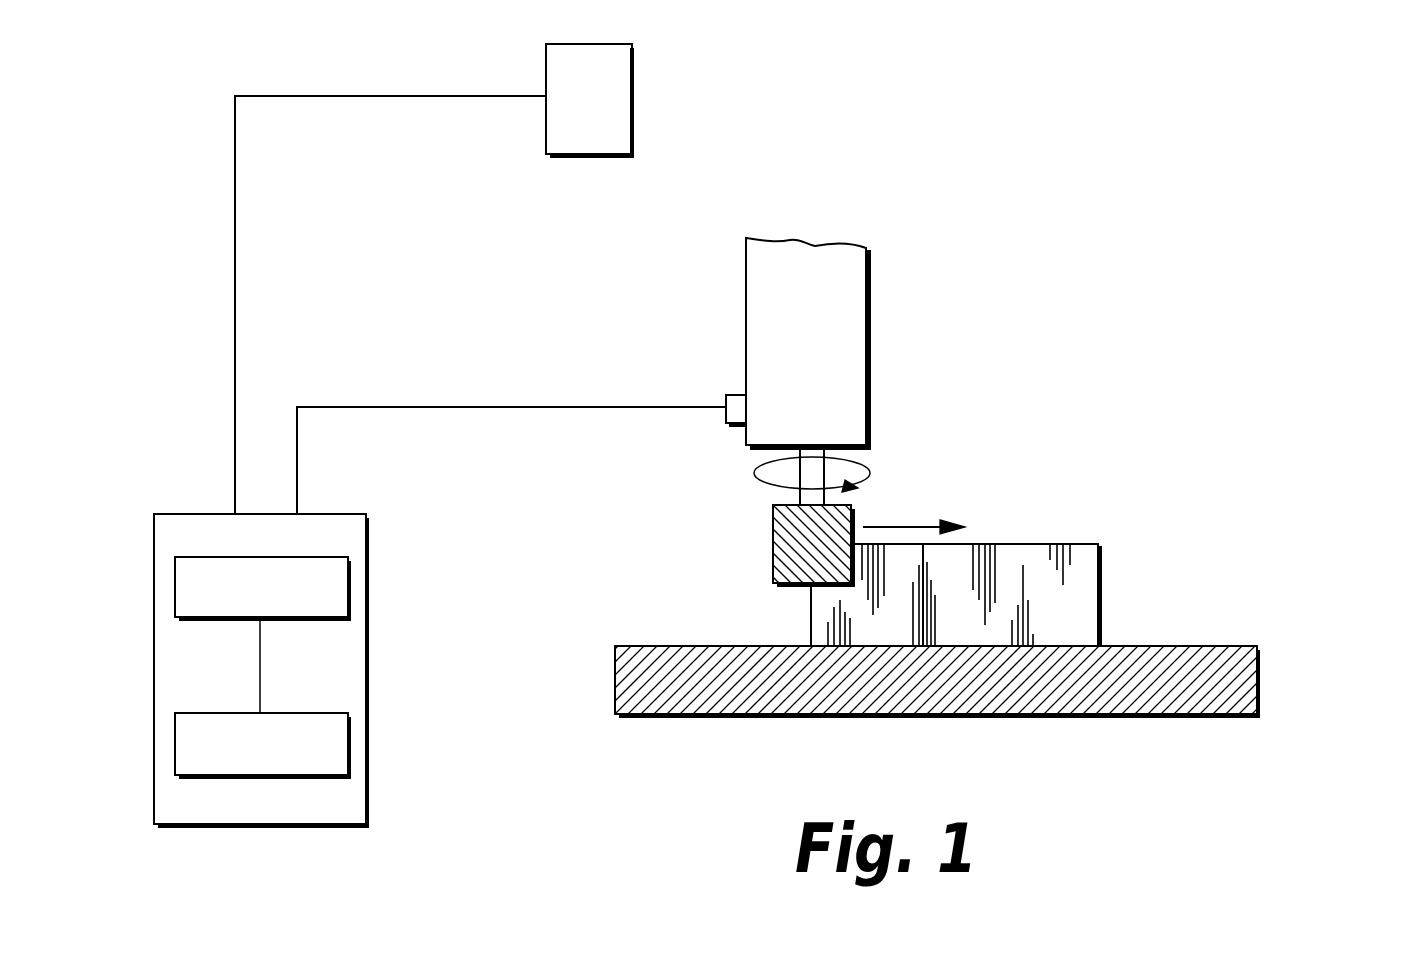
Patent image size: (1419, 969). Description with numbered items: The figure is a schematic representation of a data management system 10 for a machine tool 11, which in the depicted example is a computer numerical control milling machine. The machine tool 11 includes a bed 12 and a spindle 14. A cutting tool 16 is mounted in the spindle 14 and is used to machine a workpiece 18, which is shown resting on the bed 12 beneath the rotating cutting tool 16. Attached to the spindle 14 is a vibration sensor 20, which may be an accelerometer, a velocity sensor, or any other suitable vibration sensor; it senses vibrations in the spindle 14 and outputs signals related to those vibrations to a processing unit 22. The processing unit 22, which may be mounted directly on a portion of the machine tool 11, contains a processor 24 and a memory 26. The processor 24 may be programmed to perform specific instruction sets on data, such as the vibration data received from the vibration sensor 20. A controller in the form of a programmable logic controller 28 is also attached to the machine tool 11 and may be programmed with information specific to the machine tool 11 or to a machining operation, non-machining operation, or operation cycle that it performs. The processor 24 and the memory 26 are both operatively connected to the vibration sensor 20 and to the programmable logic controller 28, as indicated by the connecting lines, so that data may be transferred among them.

The data management system 10 is at (1218, 338).
The machine tool 11 is at (1227, 648).
The bed 12 is at (1261, 675).
The spindle 14 is at (872, 300).
The cutting tool 16 is at (770, 545).
The workpiece 18 is at (1102, 563).
The vibration sensor 20 is at (735, 393).
The processing unit 22 is at (371, 801).
The processor 24 is at (352, 580).
The memory 26 is at (352, 740).
The programmable logic controller (PLC) 28 is at (634, 97).